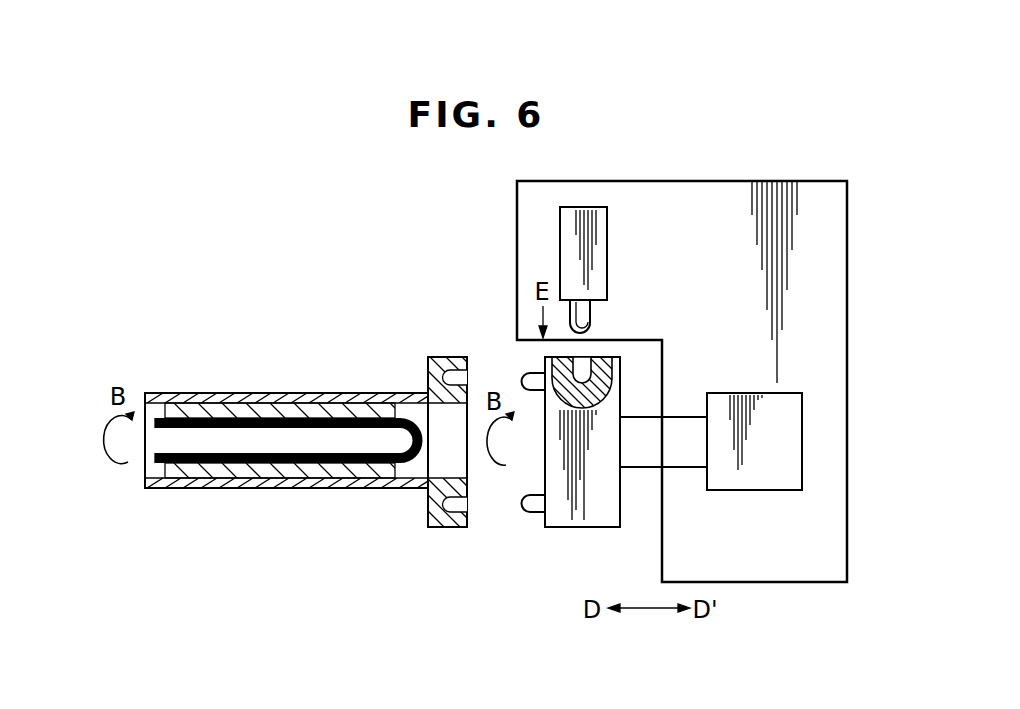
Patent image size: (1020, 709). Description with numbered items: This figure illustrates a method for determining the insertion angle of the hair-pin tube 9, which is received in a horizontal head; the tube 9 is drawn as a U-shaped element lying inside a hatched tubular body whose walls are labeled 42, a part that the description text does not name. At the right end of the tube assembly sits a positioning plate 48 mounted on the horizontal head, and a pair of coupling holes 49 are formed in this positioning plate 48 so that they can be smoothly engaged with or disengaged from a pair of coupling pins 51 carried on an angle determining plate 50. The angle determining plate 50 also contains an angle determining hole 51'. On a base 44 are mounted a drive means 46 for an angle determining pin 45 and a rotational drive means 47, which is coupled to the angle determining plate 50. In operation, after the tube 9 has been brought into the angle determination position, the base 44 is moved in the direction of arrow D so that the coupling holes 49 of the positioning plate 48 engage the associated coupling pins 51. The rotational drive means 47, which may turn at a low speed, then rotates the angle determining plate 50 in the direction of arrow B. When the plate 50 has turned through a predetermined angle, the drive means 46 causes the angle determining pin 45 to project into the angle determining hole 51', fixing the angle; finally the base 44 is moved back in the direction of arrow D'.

The hair-pin tube 9 is at (306, 463).
The heat insulating tube 42 is at (217, 408).
The base 44 is at (788, 578).
The angle determining pin 45 is at (590, 316).
The drive means 46 is at (607, 246).
The rotational drive means 47 is at (757, 393).
The positioning plate 48 is at (433, 372).
The coupling holes 49 is at (465, 375).
The angle determining plate 50 is at (596, 515).
The coupling pins 51 is at (513, 457).
The angle determining hole 51' is at (598, 378).